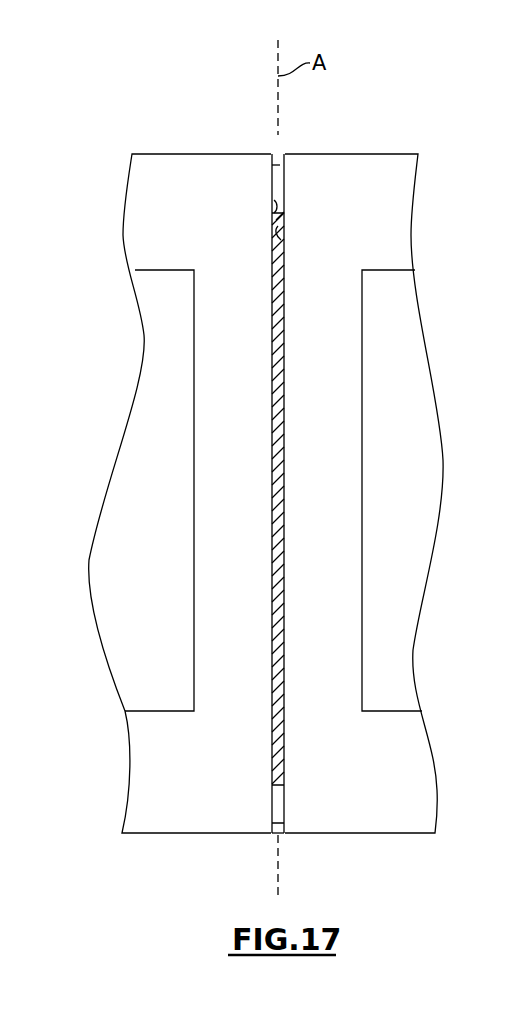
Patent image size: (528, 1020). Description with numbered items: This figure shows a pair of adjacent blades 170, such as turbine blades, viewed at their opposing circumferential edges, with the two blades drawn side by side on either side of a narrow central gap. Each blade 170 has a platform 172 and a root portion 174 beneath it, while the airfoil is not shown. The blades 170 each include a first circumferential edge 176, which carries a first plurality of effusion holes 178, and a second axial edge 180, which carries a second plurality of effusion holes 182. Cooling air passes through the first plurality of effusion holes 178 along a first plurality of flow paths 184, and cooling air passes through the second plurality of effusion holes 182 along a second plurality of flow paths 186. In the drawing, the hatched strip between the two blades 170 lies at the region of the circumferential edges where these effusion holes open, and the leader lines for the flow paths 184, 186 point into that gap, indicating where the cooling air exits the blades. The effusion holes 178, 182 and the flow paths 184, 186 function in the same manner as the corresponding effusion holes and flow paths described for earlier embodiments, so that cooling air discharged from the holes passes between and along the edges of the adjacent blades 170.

The blade 170 is at (273, 450).
The platform 172 is at (140, 178).
The root portion 174 is at (143, 392).
The first circumferential edge 176 is at (268, 830).
The first plurality of effusion holes 178 is at (282, 232).
The second axial edge 180 is at (285, 165).
The second plurality of effusion holes 182 is at (272, 196).
The first plurality of flow paths 184 is at (277, 247).
The second plurality of flow paths 186 is at (286, 220).